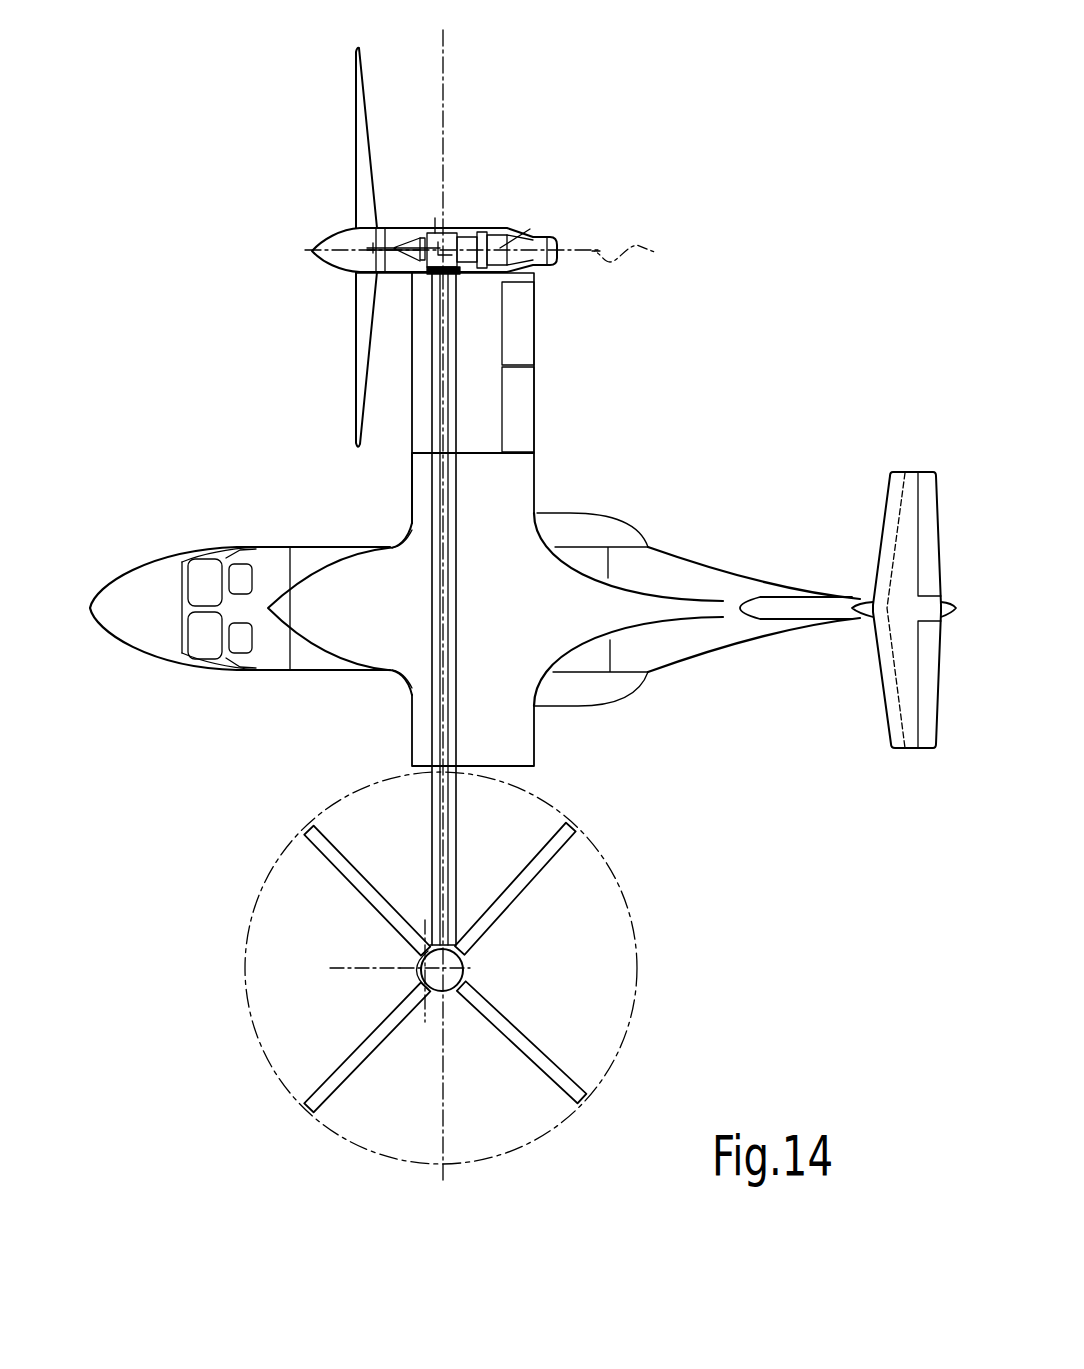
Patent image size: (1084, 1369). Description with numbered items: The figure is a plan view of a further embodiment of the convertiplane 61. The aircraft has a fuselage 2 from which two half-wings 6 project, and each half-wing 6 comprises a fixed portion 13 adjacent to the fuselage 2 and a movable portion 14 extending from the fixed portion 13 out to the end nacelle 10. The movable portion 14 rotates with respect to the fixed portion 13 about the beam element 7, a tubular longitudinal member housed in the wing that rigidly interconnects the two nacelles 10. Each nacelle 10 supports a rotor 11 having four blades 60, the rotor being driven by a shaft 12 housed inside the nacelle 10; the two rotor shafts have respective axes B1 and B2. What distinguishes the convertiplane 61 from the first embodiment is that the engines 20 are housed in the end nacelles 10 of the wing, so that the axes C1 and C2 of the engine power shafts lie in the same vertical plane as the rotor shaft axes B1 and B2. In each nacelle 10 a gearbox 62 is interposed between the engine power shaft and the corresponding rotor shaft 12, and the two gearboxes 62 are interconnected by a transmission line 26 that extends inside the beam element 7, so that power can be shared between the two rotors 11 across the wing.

The fuselage 2 is at (708, 647).
The half-wing 6 is at (405, 433).
The beam element 7 is at (425, 553).
The nacelle 10 is at (472, 227).
The rotor 11 is at (343, 218).
The shaft 12 is at (388, 248).
The fixed portion 13 is at (503, 507).
The movable portion 14 is at (478, 393).
The engine 20 is at (512, 246).
The transmission line 26 is at (432, 707).
The blade 60 is at (357, 143).
The convertiplane 61 is at (822, 412).
The gearbox 62 is at (437, 210).
The rotor shaft axis B1 is at (480, 968).
The power shaft axis C1 is at (361, 971).
The rotor shaft axis B2 is at (677, 251).
The power shaft axis C2 is at (677, 251).